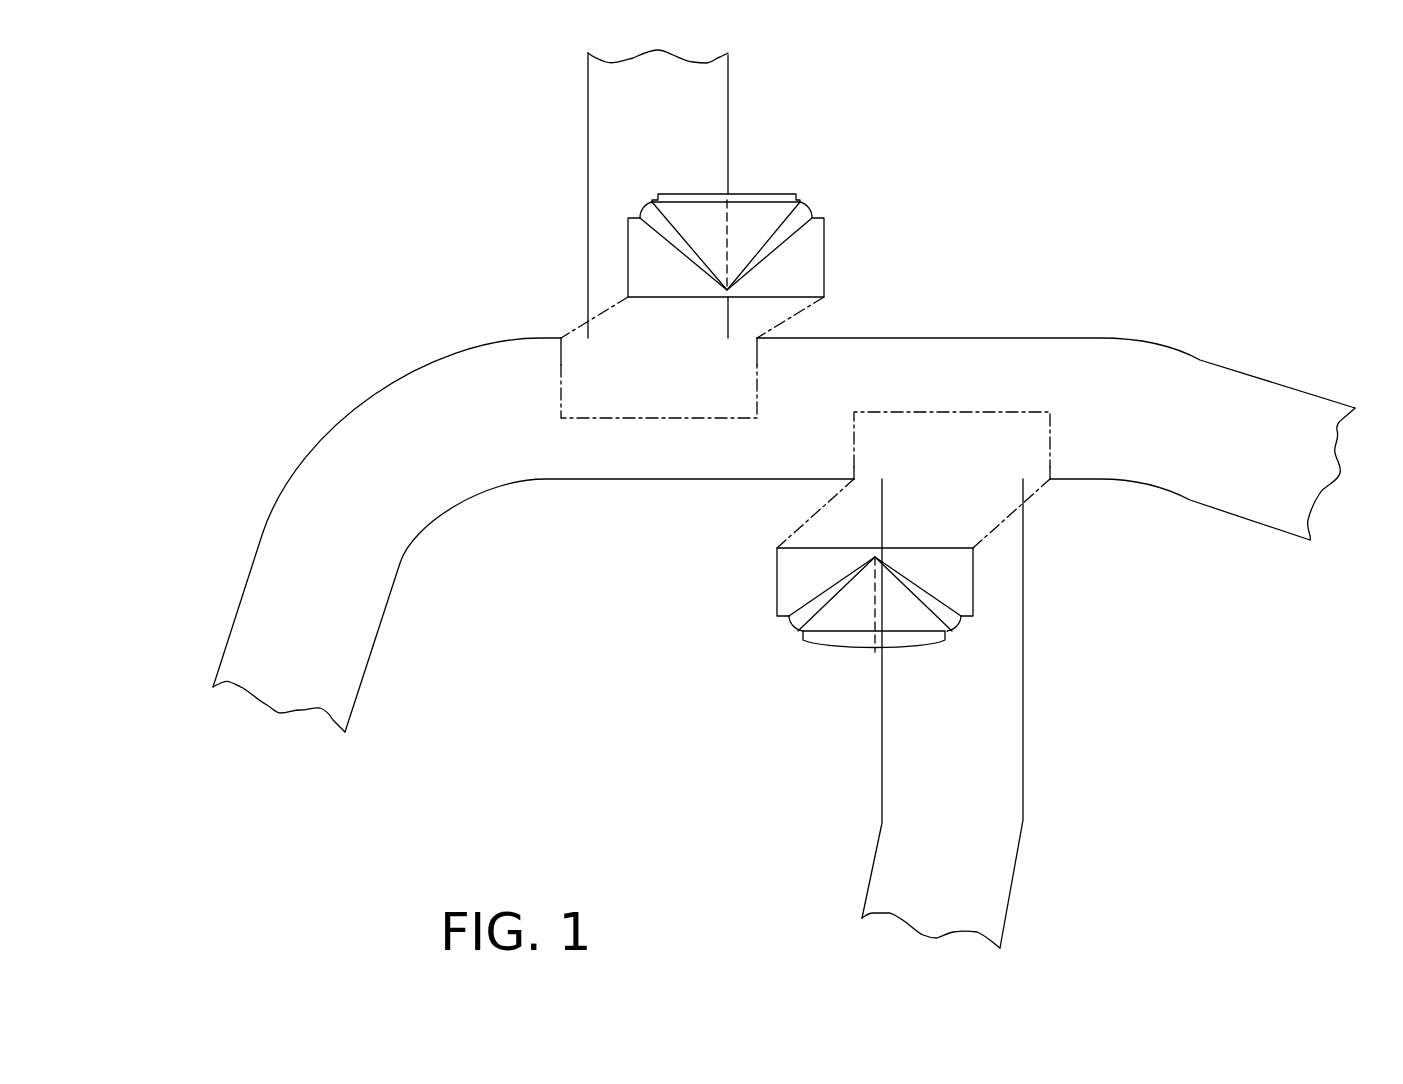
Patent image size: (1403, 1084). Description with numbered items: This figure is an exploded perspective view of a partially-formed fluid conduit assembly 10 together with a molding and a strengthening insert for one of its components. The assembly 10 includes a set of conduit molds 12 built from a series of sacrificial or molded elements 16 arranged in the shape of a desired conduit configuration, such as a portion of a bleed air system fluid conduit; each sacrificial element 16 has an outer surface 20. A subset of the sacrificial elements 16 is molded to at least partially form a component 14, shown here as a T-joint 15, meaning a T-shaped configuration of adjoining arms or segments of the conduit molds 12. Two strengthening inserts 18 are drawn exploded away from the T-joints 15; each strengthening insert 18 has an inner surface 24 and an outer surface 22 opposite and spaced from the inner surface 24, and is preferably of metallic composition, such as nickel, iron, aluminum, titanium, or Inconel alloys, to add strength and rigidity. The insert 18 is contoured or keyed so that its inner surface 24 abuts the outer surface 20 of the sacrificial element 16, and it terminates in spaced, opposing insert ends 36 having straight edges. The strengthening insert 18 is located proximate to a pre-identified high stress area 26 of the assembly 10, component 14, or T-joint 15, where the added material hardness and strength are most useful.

The partially-formed fluid conduit assembly 10 is at (1156, 135).
The conduit molds 12 is at (387, 368).
The component 14 is at (795, 420).
The T-joint 15 is at (815, 206).
The sacrificial elements 16 is at (613, 98).
The strengthening insert 18 is at (643, 252).
The outer surface 20 is at (682, 93).
The outer surface 22 is at (675, 278).
The inner surface 24 is at (743, 299).
The high stress area 26 is at (1000, 328).
The insert ends 36 is at (627, 258).